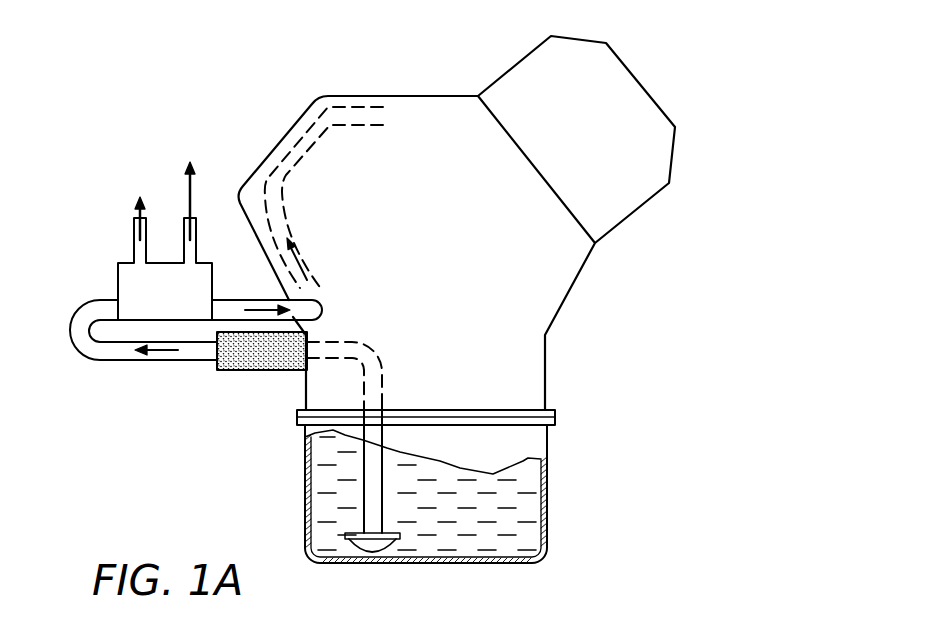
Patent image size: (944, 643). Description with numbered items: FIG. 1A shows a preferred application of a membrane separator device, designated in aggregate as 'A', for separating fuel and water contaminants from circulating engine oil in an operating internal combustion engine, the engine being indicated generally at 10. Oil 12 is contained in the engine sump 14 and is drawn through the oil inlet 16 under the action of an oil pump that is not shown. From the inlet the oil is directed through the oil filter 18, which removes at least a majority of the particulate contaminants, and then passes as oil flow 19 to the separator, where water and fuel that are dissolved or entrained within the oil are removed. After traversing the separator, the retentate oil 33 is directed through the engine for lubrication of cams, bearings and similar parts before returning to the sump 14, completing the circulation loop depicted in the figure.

The engine housing 10 is at (657, 78).
The oil 12 is at (485, 527).
The engine sump 14 is at (547, 487).
The oil inlet 16 is at (368, 546).
The oil filter 18 is at (275, 370).
The oil flow 19 is at (160, 353).
The retentate oil 33 is at (263, 305).